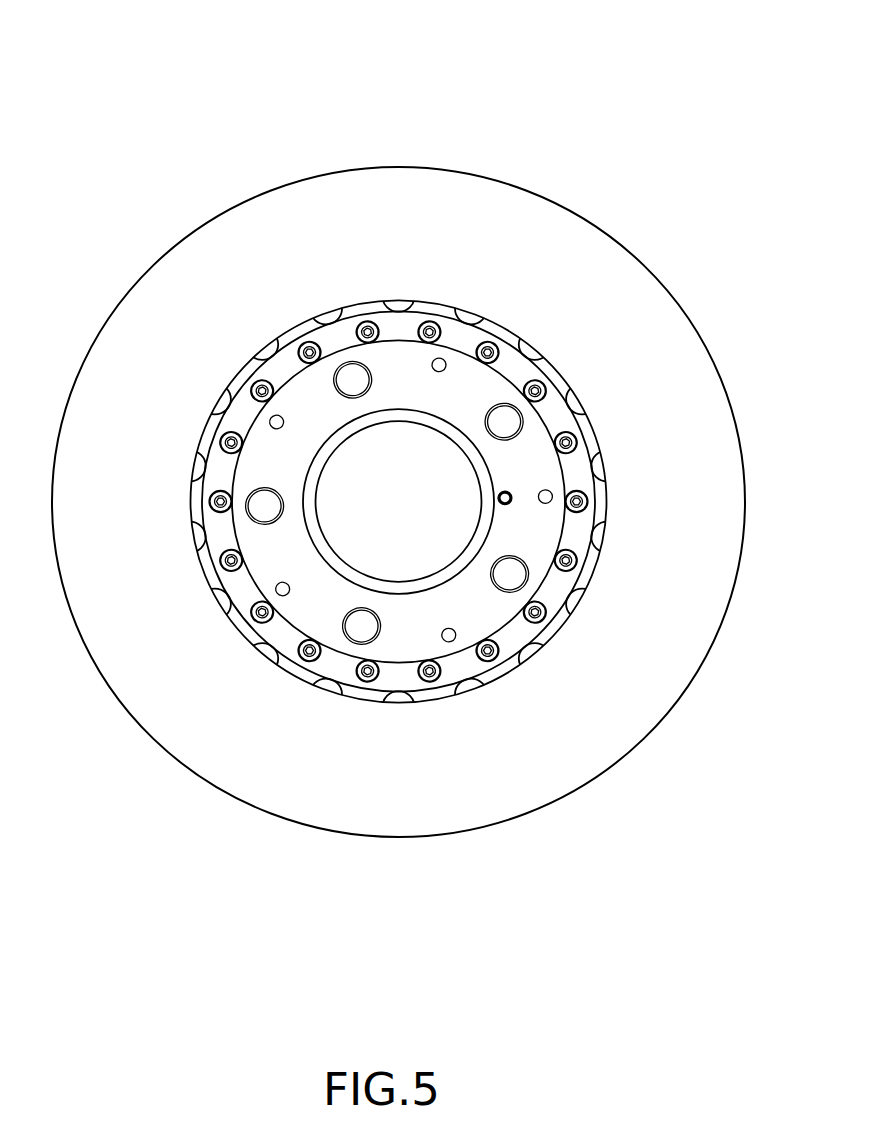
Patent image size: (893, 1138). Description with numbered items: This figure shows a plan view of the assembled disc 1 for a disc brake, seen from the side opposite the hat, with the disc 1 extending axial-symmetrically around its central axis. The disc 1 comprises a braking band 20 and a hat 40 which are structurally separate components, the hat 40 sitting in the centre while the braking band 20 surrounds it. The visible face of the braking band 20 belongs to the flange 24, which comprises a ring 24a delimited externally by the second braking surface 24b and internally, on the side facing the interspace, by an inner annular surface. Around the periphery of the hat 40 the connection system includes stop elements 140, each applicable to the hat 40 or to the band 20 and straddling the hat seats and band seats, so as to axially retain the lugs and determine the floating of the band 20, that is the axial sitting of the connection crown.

The disc 1 is at (152, 198).
The braking band 20 is at (460, 166).
The flange 24 is at (614, 237).
The ring 24a is at (605, 668).
The second braking surface 24b is at (508, 778).
The hat 40 is at (533, 533).
The stop element 140 is at (277, 635).